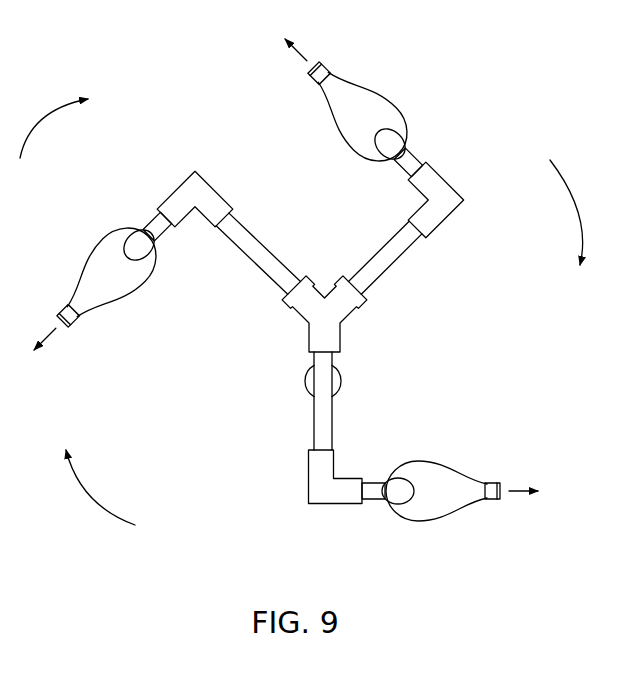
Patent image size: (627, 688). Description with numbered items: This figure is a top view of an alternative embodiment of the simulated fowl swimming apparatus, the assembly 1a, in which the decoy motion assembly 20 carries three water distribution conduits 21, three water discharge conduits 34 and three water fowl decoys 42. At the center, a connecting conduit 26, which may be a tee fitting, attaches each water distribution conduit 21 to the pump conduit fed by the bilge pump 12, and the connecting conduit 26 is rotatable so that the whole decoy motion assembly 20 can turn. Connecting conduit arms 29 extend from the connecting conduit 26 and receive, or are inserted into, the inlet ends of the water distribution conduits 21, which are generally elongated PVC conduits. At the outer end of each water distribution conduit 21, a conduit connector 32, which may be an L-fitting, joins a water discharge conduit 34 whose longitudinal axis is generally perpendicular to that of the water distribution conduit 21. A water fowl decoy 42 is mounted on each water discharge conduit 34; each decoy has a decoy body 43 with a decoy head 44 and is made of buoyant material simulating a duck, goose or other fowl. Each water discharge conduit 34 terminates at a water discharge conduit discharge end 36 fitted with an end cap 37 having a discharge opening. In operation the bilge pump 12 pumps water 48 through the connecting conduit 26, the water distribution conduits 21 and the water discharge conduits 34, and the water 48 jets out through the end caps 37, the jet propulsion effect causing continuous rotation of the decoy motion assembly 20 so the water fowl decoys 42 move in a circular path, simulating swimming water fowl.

The assembly 1a is at (226, 77).
The bilge pump 12 is at (304, 381).
The decoy motion assembly 20 is at (314, 331).
The water distribution conduit 21 is at (370, 246).
The connecting conduit 26 is at (343, 307).
The connecting conduit arm 29 is at (303, 292).
The conduit connector 32 is at (317, 478).
The water discharge conduit 34 is at (369, 478).
The water discharge conduit discharge end 36 is at (504, 487).
The end cap 37 is at (503, 503).
The water fowl decoy 42 is at (280, 311).
The decoy body 43 is at (428, 508).
The decoy head 44 is at (392, 496).
The water 48 is at (512, 494).